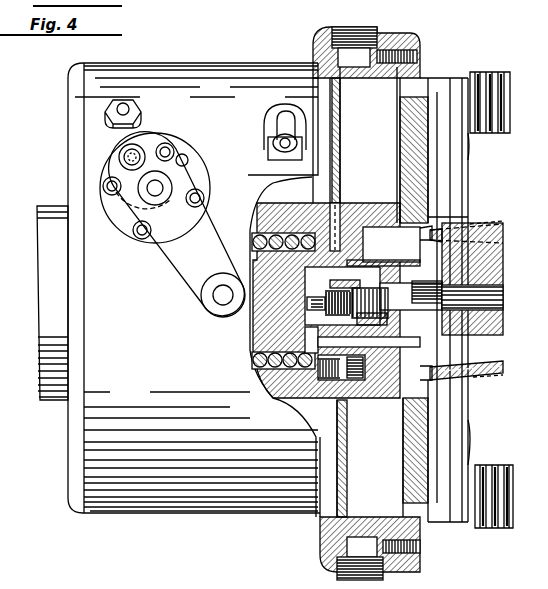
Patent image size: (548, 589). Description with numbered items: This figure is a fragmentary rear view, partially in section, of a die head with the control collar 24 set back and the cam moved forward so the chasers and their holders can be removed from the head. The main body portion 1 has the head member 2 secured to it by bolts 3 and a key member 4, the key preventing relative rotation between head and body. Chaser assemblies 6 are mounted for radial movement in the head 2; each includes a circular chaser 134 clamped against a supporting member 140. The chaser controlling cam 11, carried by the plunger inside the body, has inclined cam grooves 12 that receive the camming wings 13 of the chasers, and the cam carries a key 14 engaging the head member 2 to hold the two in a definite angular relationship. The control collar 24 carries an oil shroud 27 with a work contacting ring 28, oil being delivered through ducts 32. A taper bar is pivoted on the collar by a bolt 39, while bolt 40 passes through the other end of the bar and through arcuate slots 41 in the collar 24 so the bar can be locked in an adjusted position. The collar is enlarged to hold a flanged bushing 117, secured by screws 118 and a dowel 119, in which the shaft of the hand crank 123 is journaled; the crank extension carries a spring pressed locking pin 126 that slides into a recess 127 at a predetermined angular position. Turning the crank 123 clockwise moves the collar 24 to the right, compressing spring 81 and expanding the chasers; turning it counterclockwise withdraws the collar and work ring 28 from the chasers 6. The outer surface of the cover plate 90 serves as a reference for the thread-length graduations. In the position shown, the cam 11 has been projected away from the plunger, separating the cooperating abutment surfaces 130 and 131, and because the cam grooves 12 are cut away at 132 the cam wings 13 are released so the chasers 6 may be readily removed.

The main body portion 1 is at (57, 403).
The head member 2 is at (400, 134).
The bolts 3 is at (364, 362).
The key member 4 is at (342, 206).
The chaser assemblies 6 is at (472, 152).
The chaser controlling cam 11 is at (503, 266).
The inclined cam grooves 12 is at (503, 236).
The camming wings 13 is at (432, 227).
The key 14 is at (376, 264).
The control collar 24 is at (214, 66).
The oil shroud 27 is at (316, 40).
The work contacting ring 28 is at (420, 66).
The ducts 32 is at (370, 521).
The bolt 39 is at (135, 106).
The bolt 40 is at (275, 139).
The arcuate slots 41 is at (280, 113).
The spring 81 is at (275, 403).
The cover plate 90 is at (68, 102).
The flanged bushing 117 is at (206, 166).
The screws 118 is at (164, 147).
The dowel 119 is at (184, 156).
The hand crank 123 is at (205, 232).
The spring pressed locking pin 126 is at (125, 157).
The recess 127 is at (126, 178).
The abutment surface 130 is at (256, 248).
The abutment surface 131 is at (250, 318).
The cut away portion 132 is at (470, 224).
The chaser 134 is at (503, 76).
The supporting member 140 is at (436, 92).